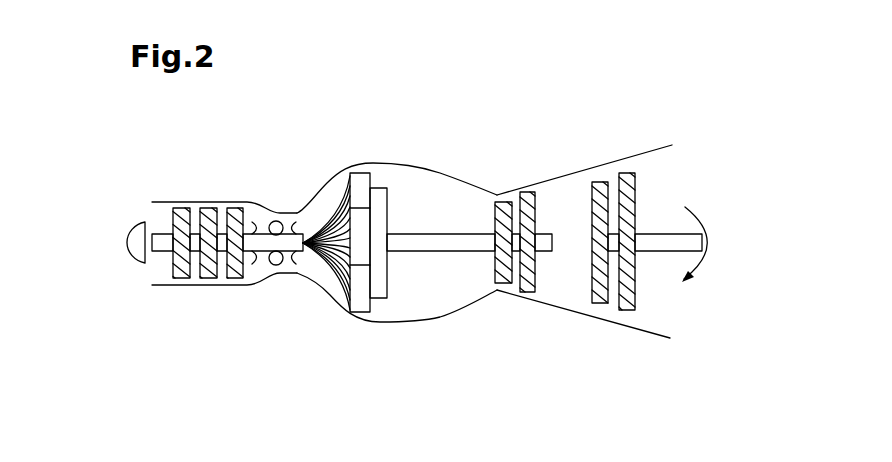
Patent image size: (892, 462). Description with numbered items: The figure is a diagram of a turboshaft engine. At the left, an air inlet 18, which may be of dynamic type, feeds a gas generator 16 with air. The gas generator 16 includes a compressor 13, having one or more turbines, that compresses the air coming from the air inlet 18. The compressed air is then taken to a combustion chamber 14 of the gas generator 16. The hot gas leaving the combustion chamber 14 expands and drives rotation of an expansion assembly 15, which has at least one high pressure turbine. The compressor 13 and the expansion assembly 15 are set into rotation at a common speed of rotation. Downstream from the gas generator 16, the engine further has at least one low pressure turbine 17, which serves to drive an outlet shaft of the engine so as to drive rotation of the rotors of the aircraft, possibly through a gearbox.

The compressor 13 is at (305, 301).
The combustion chamber 14 is at (432, 296).
The expansion assembly 15 is at (515, 322).
The gas generator 16 is at (553, 147).
The low pressure turbine 17 is at (614, 129).
The air inlet 18 is at (107, 253).